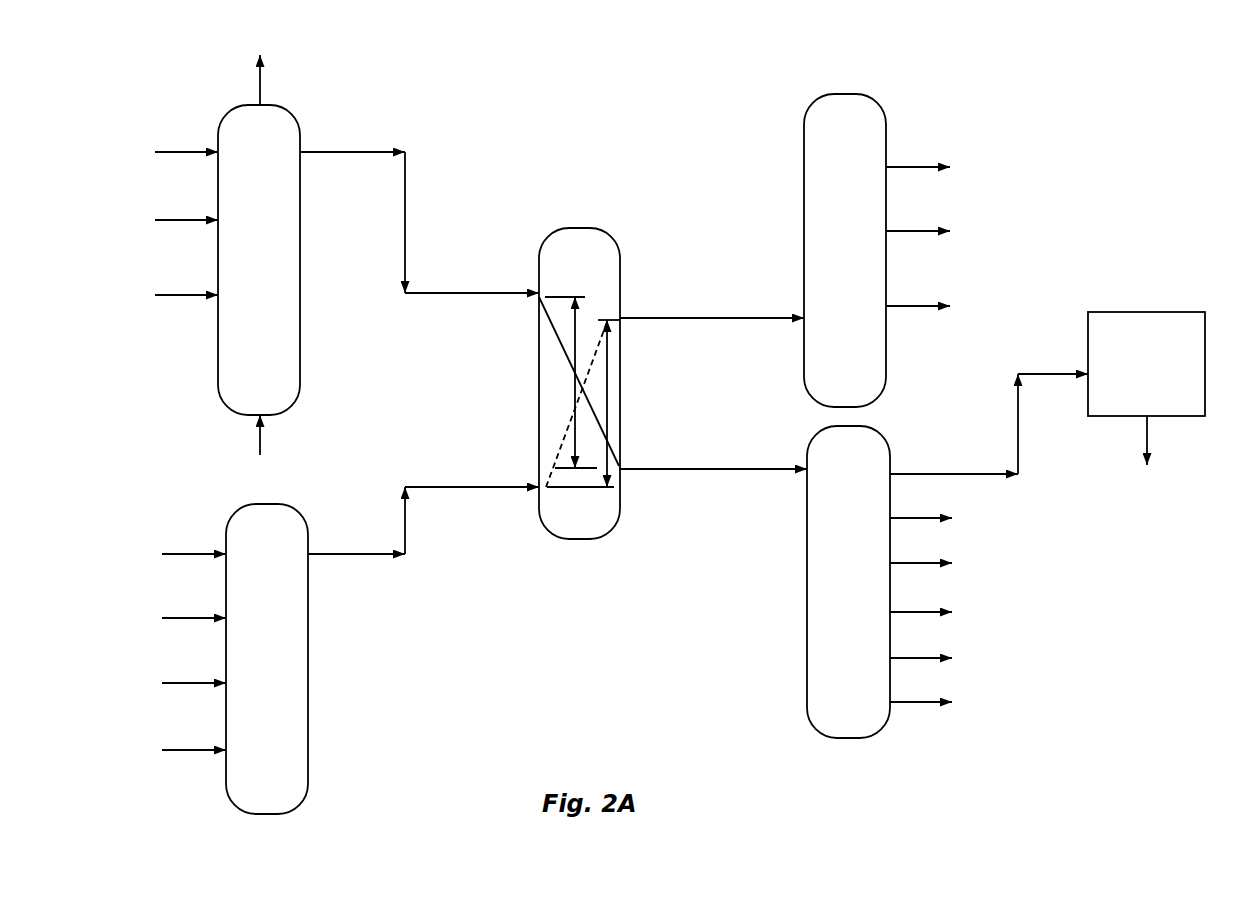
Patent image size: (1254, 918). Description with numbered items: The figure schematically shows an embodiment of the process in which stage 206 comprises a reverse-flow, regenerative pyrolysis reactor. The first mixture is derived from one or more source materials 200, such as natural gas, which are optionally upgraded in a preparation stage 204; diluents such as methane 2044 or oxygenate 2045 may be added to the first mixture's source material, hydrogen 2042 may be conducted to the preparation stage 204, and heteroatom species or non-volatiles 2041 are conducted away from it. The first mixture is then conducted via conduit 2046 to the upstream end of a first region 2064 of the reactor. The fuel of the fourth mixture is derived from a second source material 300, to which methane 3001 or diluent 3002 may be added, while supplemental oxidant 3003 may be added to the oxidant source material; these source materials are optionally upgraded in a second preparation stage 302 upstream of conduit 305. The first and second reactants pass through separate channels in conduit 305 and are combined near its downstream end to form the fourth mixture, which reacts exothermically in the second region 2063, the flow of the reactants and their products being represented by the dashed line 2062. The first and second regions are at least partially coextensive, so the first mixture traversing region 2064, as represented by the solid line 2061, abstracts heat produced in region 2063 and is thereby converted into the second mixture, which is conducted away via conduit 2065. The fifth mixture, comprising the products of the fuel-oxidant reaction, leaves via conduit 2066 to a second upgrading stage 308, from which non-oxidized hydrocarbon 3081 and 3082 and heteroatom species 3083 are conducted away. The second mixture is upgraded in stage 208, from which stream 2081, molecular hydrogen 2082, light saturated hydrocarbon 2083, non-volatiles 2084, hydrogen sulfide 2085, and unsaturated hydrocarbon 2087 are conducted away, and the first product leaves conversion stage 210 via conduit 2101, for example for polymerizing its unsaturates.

The source material 200 is at (197, 152).
The preparation stage 204 is at (273, 105).
The conduit for conducting away heteroatom species or non-volatiles 2041 is at (258, 92).
The conduit for conducting hydrogen 2042 is at (259, 440).
The conduit for adding light saturated hydrocarbon 2044 is at (192, 220).
The conduit for adding oxygenate 2045 is at (192, 295).
The conduit 2046 is at (407, 229).
The stage 206 is at (598, 228).
The solid line 2061 is at (557, 335).
The dashed line 2062 is at (560, 443).
The second region 2063 is at (608, 397).
The first region 2064 is at (577, 388).
The conduit 2065 is at (673, 469).
The conduit 2066 is at (672, 318).
The upgrading stage 208 is at (868, 738).
The overhead stream of column 208 2081 is at (907, 474).
The conduit for conducting molecular hydrogen 2082 is at (925, 518).
The conduit for conducting light saturated hydrocarbon 2083 is at (930, 563).
The conduit for conducting away non-volatiles 2084 is at (927, 612).
The conduit for conducting away heteroatom species 2085 is at (925, 658).
The conduit for conducting away unsaturated hydrocarbon 2087 is at (925, 702).
The conversion stage 210 is at (1133, 312).
The conduit 2101 is at (1146, 437).
The second source material 300 is at (192, 554).
The conduit for adding methane 3001 is at (192, 750).
The conduit for adding diluent 3002 is at (188, 683).
The conduit for adding supplemental oxidant 3003 is at (188, 618).
The second preparation stage 302 is at (280, 814).
The conduit 305 is at (407, 535).
The second upgrading stage 308 is at (865, 95).
The conduit for conducting away non-oxidized hydrocarbon 3081 is at (917, 167).
The conduit for conducting away non-oxidized hydrocarbon 3082 is at (912, 231).
The conduit for conducting away heteroatom species 3083 is at (915, 306).